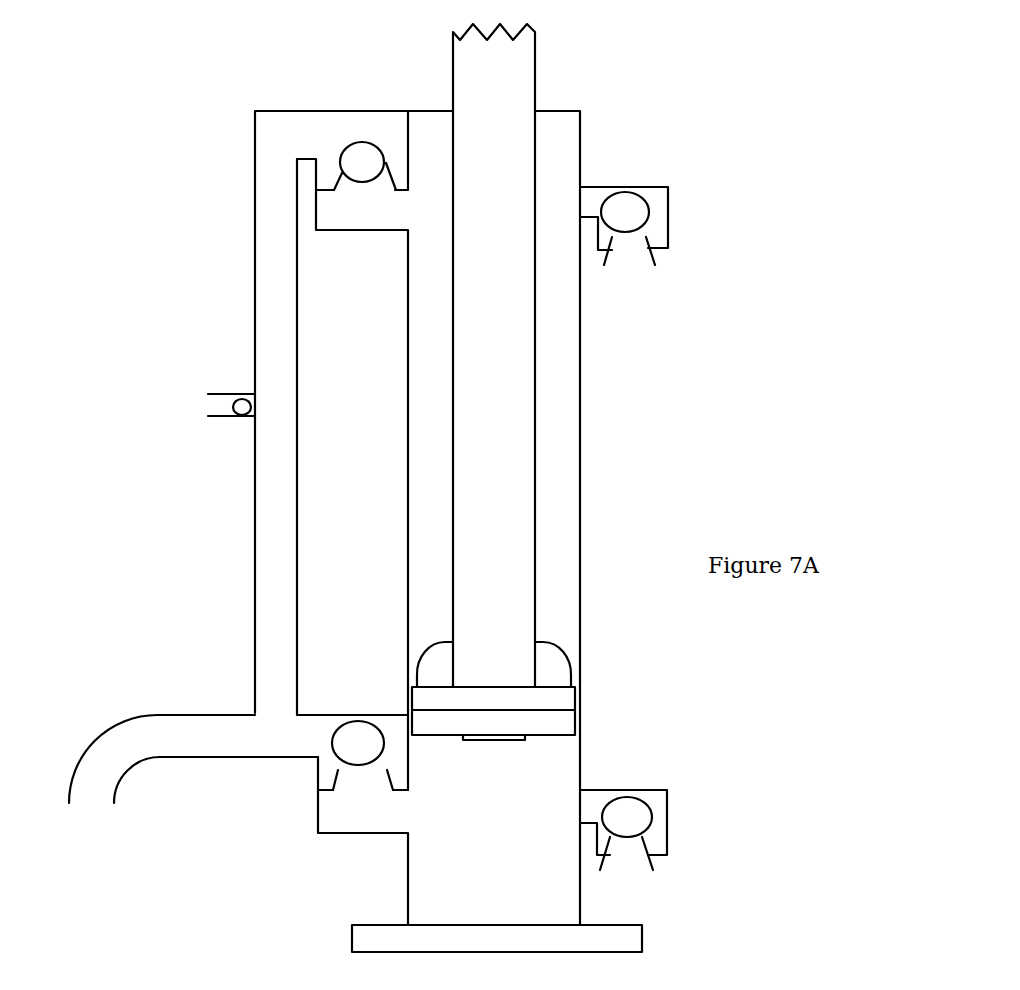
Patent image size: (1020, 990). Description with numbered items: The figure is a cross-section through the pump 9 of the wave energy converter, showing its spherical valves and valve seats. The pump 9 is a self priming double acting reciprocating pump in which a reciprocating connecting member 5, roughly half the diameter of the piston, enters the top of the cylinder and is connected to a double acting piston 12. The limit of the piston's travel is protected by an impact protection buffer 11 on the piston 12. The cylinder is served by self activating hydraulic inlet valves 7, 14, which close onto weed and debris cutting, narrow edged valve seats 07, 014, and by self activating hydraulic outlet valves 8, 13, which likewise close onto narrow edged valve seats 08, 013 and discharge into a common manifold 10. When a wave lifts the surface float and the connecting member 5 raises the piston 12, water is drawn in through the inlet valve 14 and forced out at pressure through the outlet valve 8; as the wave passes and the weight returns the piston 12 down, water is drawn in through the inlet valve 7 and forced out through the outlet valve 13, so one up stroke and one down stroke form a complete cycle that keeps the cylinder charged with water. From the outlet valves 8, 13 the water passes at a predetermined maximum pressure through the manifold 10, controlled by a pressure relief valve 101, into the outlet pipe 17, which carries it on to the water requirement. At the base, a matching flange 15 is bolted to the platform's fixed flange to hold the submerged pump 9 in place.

The reciprocating connecting member 5 is at (517, 88).
The inlet valve 7 is at (650, 222).
The valve seat 07 is at (645, 230).
The outlet valve 8 is at (350, 158).
The valve seat 08 is at (333, 180).
The pump 9 is at (582, 412).
The manifold 10 is at (270, 330).
The pressure relief valve 101 is at (243, 407).
The impact protection buffer 11 is at (550, 662).
The double acting piston 12 is at (560, 713).
The outlet valve 13 is at (347, 735).
The valve seat 013 is at (333, 773).
The inlet valve 14 is at (635, 828).
The valve seat 014 is at (650, 838).
The flange 15 is at (633, 938).
The outlet pipe 17 is at (95, 783).